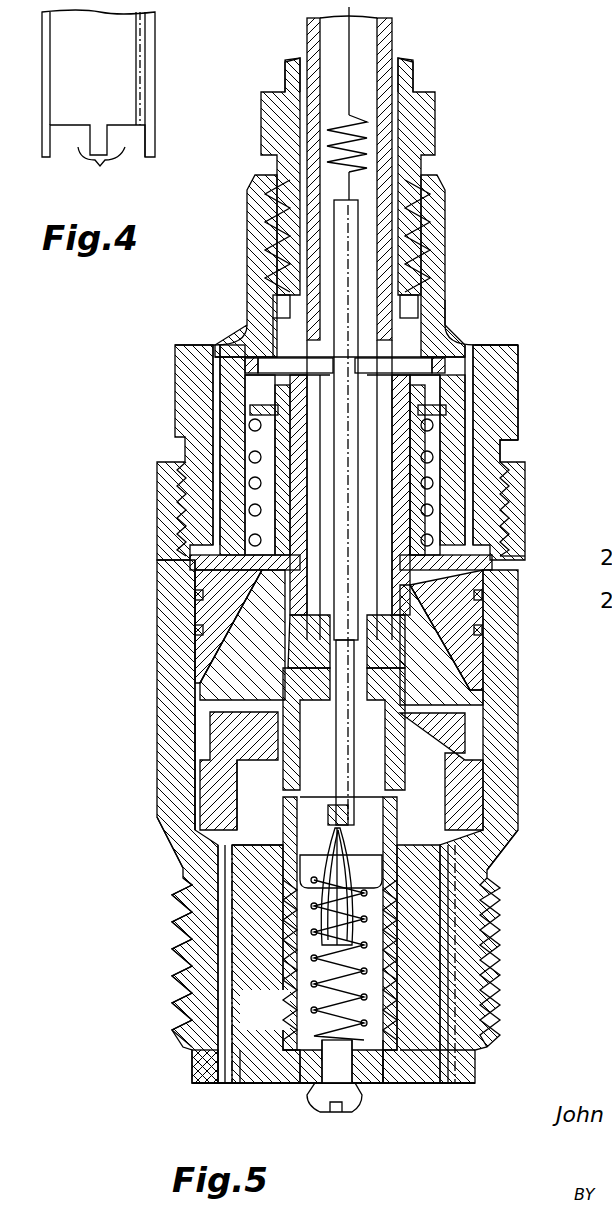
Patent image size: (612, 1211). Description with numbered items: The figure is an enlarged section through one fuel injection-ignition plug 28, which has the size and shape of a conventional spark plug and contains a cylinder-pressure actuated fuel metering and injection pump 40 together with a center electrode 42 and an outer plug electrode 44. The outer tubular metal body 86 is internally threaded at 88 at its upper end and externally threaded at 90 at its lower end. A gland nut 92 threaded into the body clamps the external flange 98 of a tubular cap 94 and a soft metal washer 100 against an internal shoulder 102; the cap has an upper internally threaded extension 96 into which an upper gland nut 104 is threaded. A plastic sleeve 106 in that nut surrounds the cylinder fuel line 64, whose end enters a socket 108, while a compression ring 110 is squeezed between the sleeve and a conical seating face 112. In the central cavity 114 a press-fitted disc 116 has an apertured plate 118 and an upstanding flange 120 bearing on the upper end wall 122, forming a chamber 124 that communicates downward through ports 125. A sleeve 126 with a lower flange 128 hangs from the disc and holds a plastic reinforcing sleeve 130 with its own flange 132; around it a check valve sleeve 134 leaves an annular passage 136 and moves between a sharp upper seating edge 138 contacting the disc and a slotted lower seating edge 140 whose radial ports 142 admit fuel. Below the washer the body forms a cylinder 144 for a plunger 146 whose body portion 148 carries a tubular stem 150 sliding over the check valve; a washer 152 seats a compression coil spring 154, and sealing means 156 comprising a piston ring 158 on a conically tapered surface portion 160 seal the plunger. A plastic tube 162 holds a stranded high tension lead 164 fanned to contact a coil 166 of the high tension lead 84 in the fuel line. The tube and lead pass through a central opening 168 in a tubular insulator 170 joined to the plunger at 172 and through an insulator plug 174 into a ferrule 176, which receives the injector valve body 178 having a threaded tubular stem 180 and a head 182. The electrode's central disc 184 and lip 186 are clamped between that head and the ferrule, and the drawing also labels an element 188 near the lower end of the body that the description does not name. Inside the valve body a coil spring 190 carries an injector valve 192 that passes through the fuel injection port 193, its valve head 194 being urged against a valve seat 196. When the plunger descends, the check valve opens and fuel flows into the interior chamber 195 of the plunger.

In FIG. 5, the fuel injection-ignition plug 28 is at (528, 430).
In FIG. 5, the fuel metering and injection pump 40 is at (182, 505).
In FIG. 5, the center electrode 42 is at (242, 1086).
In FIG. 5, the outer plug electrode 44 is at (192, 1086).
In FIG. 5, the cylinder fuel line 64 is at (316, 40).
In FIG. 5, the high tension lead 84 is at (300, 74).
In FIG. 5, the outer tubular metal body 86 is at (526, 718).
In FIG. 5, the internal threads 88 is at (503, 450).
In FIG. 5, the external threads 90 is at (500, 908).
In FIG. 5, the gland nut 92 is at (522, 366).
In FIG. 5, the tubular cap 94 is at (450, 328).
In FIG. 5, the internally threaded extension 96 is at (447, 210).
In FIG. 5, the external flange 98 is at (482, 556).
In FIG. 5, the soft metal washer 100 is at (492, 566).
In FIG. 5, the internal shoulder 102 is at (200, 580).
In FIG. 5, the upper gland nut 104 is at (432, 118).
In FIG. 5, the plastic sleeve 106 is at (272, 110).
In FIG. 5, the socket 108 is at (425, 268).
In FIG. 5, the compression ring 110 is at (265, 318).
In FIG. 5, the conical seating face 112 is at (270, 332).
In FIG. 5, the central cavity 114 is at (216, 400).
In FIG. 5, the disc 116 is at (232, 430).
In FIG. 5, the apertured central plate 118 is at (416, 305).
In FIG. 5, the upstanding flange 120 is at (520, 350).
In FIG. 5, the upper end wall 122 is at (515, 343).
In FIG. 5, the chamber 124 is at (345, 330).
In FIG. 5, the ports 125 is at (262, 390).
In FIG. 5, the sleeve 126 is at (204, 596).
In FIG. 5, the lower flange 128 is at (482, 614).
In FIG. 5, the plastic reinforcing sleeve 130 is at (203, 688).
In FIG. 5, the flange 132 is at (482, 640).
In FIG. 4, the check valve sleeve 134 is at (160, 52).
In FIG. 5, the check valve sleeve 134 is at (478, 482).
In FIG. 5, the annular passage 136 is at (215, 562).
In FIG. 5, the seating edge 138 is at (470, 380).
In FIG. 4, the lower seating edge 140 is at (155, 148).
In FIG. 4, the radial ports 142 is at (96, 173).
In FIG. 5, the cylinder 144 is at (200, 818).
In FIG. 5, the plunger 146 is at (198, 718).
In FIG. 5, the plunger body portion 148 is at (239, 771).
In FIG. 5, the tubular stem 150 is at (250, 500).
In FIG. 5, the washer 152 is at (462, 376).
In FIG. 5, the compression coil spring 154 is at (432, 392).
In FIG. 5, the sealing means 156 is at (212, 650).
In FIG. 5, the piston ring 158 is at (198, 622).
In FIG. 5, the conically tapered surface portion 160 is at (492, 682).
In FIG. 5, the plastic tube 162 is at (312, 762).
In FIG. 5, the high tension lead 164 is at (350, 815).
In FIG. 5, the coil 166 is at (352, 128).
In FIG. 5, the central opening 168 is at (185, 872).
In FIG. 5, the tubular insulator 170 is at (232, 990).
In FIG. 5, the spun-over rim 172 is at (441, 771).
In FIG. 5, the insulator plug 174 is at (222, 862).
In FIG. 5, the ferrule 176 is at (384, 832).
In FIG. 5, the injector valve body 178 is at (408, 1086).
In FIG. 5, the threaded tubular stem 180 is at (490, 878).
In FIG. 5, the head 182 is at (296, 1086).
In FIG. 5, the central disc 184 is at (372, 952).
In FIG. 5, the lip 186 is at (486, 1002).
In FIG. 5, the end ring 188 is at (200, 1072).
In FIG. 5, the coil spring 190 is at (185, 958).
In FIG. 5, the injector valve 192 is at (350, 1108).
In FIG. 5, the fuel injection port 193 is at (271, 1023).
In FIG. 5, the valve head 194 is at (345, 1078).
In FIG. 5, the interior chamber 195 is at (300, 880).
In FIG. 5, the valve seat 196 is at (382, 1084).